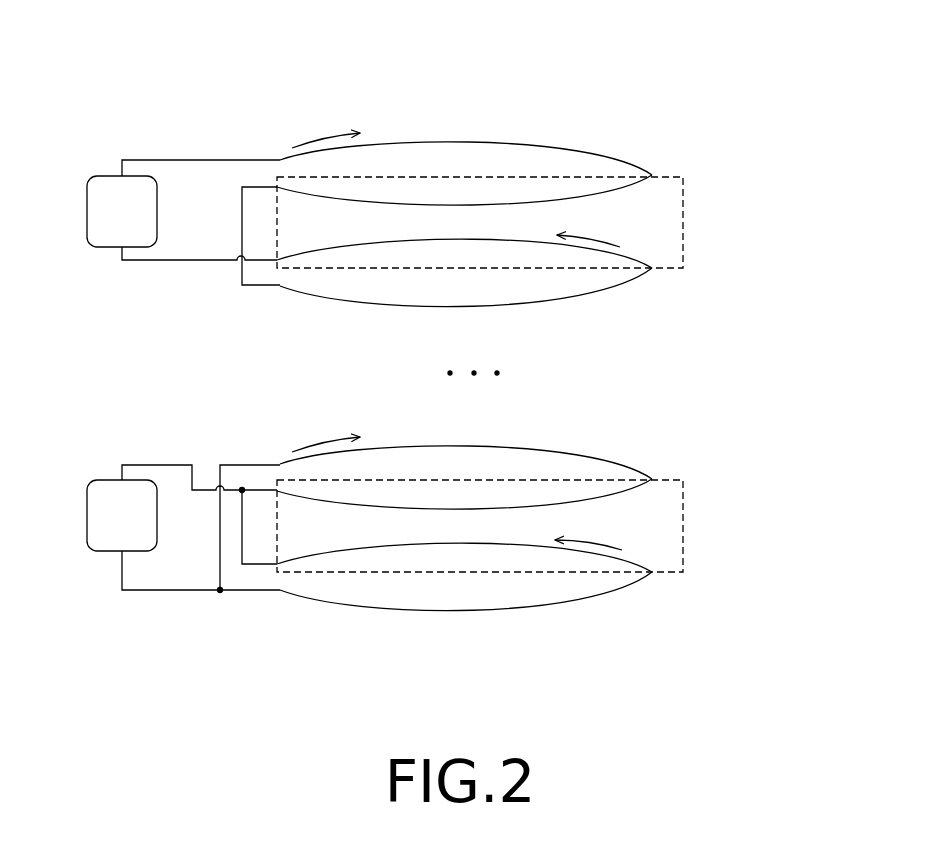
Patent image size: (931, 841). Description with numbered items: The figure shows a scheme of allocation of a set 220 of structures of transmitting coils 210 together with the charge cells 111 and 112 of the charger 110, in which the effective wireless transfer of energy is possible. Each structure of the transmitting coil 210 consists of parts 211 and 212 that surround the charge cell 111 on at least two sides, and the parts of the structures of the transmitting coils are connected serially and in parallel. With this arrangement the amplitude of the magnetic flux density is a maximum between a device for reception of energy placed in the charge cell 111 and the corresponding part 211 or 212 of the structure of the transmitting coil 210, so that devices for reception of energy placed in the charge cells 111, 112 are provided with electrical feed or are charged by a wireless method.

The charger 110 is at (486, 70).
The charge cell 111 is at (282, 289).
The charge cell 112 is at (282, 593).
The structure of transmitting coil 210 is at (741, 97).
The part of structure of transmitting coil 211 is at (593, 143).
The part of structure of transmitting coil 212 is at (593, 297).
The set of structures of transmitting coils 220 is at (809, 97).